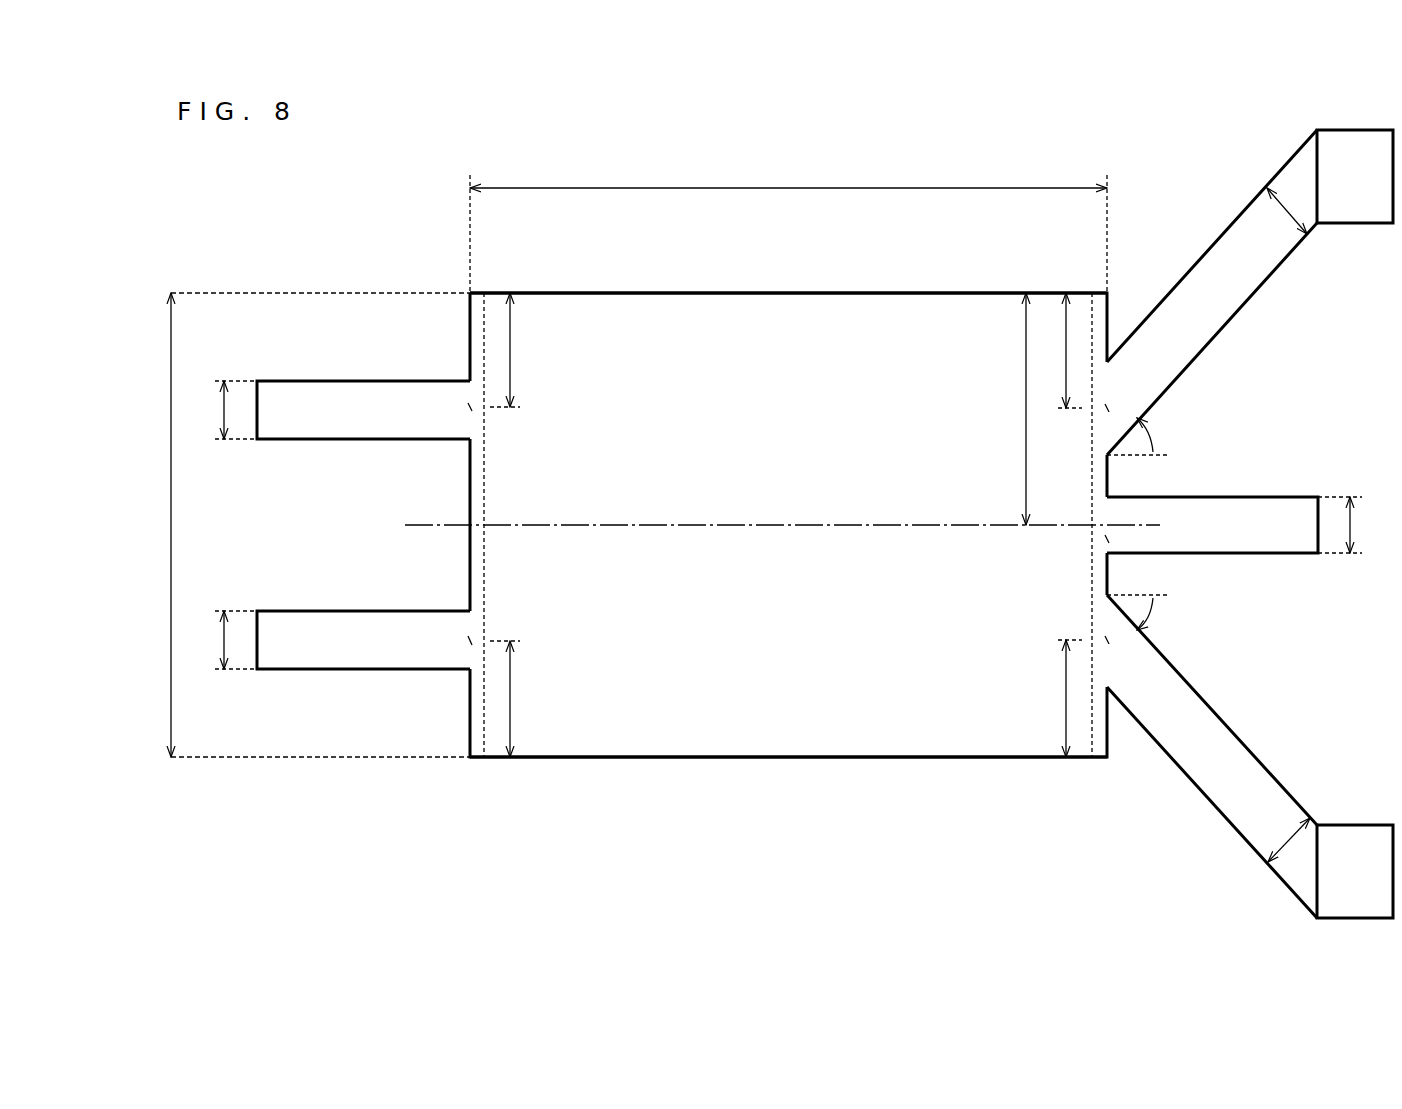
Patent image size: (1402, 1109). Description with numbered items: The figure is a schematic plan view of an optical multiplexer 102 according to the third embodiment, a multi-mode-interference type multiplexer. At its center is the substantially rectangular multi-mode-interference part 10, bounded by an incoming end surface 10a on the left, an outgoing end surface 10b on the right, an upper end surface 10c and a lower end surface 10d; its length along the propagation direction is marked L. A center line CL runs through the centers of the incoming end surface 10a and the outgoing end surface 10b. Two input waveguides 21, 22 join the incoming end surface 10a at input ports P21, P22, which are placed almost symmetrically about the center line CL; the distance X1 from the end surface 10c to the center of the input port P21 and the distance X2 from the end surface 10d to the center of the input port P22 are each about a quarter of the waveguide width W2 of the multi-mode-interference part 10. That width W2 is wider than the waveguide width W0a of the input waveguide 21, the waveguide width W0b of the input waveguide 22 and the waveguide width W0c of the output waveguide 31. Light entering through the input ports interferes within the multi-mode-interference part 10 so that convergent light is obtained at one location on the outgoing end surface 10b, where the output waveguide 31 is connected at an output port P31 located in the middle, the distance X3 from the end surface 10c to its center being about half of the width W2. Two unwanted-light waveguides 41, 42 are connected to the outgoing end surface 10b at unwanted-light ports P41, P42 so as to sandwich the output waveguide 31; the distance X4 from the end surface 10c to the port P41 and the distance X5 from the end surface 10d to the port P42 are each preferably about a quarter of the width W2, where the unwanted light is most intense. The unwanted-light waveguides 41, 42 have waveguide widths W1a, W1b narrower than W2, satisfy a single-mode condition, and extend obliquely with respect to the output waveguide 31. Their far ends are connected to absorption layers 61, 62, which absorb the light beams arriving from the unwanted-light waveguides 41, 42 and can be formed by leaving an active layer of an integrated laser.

The optical multiplexer 102 is at (388, 189).
The multi-mode-interference part 10 is at (667, 350).
The incoming end surface 10a is at (484, 487).
The outgoing end surface 10b is at (1092, 557).
The end surface 10c is at (792, 288).
The end surface 10d is at (795, 762).
The input waveguide 21 is at (343, 422).
The input waveguide 22 is at (348, 630).
The output waveguide 31 is at (1239, 512).
The unwanted-light waveguide 41 is at (1195, 288).
The unwanted-light waveguide 42 is at (1181, 752).
The absorption layer 61 is at (1356, 142).
The absorption layer 62 is at (1356, 908).
The input port P21 is at (466, 408).
The input port P22 is at (466, 641).
The output port P31 is at (1109, 539).
The unwanted-light port P41 is at (1109, 408).
The unwanted-light port P42 is at (1109, 640).
The center line CL is at (440, 527).
The waveguide width W2 is at (303, 525).
The waveguide width W0a is at (216, 410).
The waveguide width W0b is at (216, 640).
The waveguide width W0c is at (1360, 525).
The waveguide width W1a is at (1280, 213).
The waveguide width W1b is at (1278, 837).
The distance X1 is at (520, 350).
The distance X2 is at (520, 699).
The distance X3 is at (1012, 409).
The distance X4 is at (1059, 350).
The distance X5 is at (1058, 698).
The length of main body L is at (788, 227).